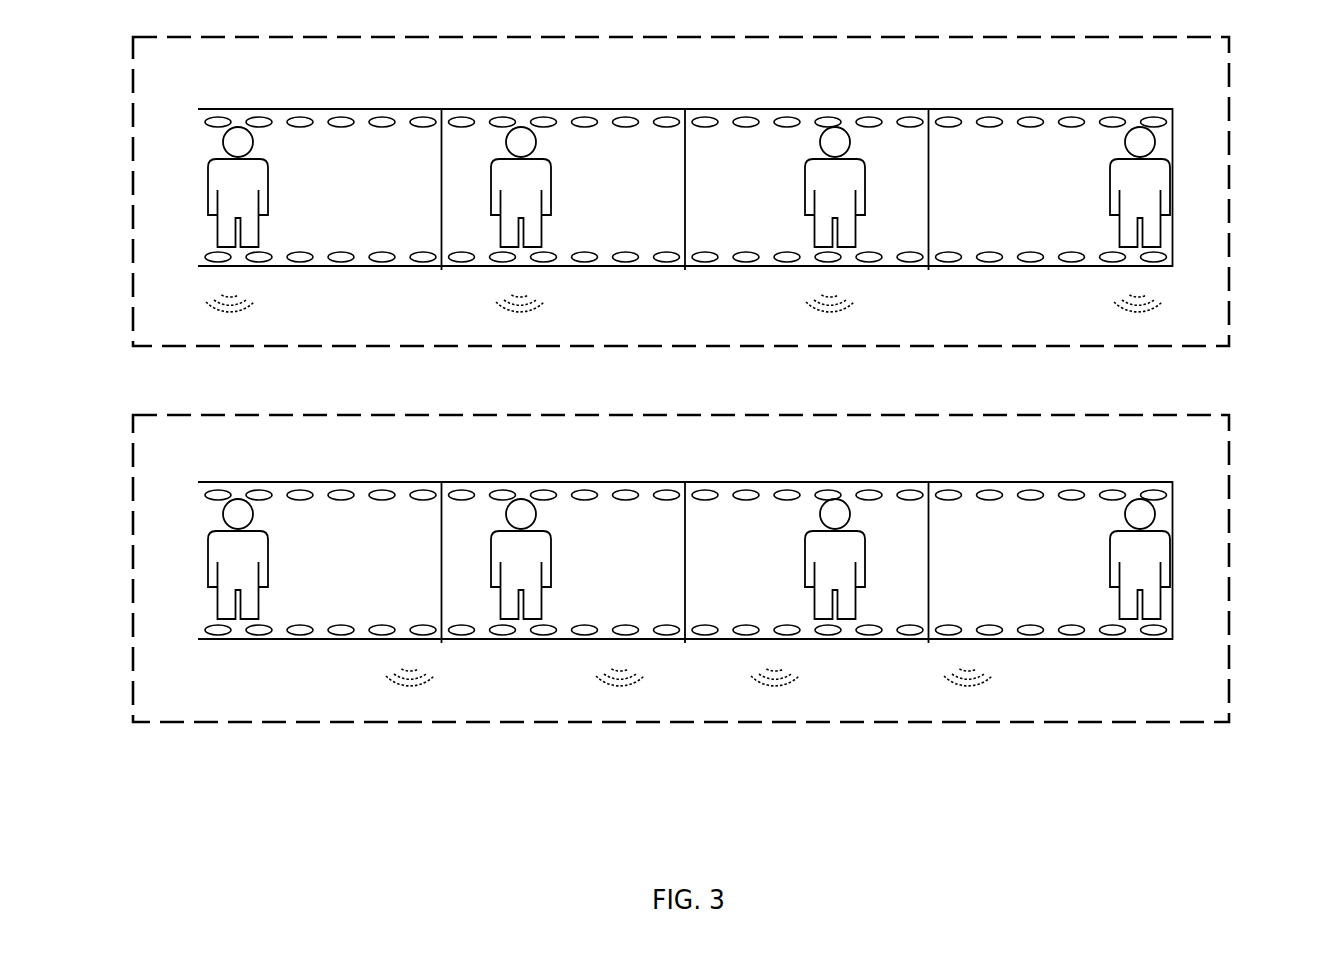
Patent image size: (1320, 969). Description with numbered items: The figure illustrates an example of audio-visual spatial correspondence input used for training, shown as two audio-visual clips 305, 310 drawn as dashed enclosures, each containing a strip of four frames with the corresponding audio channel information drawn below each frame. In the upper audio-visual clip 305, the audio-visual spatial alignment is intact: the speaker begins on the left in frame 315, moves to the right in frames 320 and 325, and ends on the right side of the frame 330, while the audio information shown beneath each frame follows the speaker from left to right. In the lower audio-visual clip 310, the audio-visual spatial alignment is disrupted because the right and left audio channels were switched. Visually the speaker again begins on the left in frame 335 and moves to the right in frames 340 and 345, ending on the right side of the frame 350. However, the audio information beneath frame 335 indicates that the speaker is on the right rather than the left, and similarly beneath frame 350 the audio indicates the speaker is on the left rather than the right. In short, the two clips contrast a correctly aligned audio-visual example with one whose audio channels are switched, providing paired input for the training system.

The audio-visual clip 305 is at (1229, 89).
The audio-visual clip 310 is at (1229, 487).
The frame 315 is at (289, 109).
The frame 320 is at (512, 109).
The frame 325 is at (762, 109).
The frame 330 is at (1017, 109).
The frame 335 is at (312, 482).
The frame 340 is at (523, 482).
The frame 345 is at (759, 482).
The frame 350 is at (1028, 482).